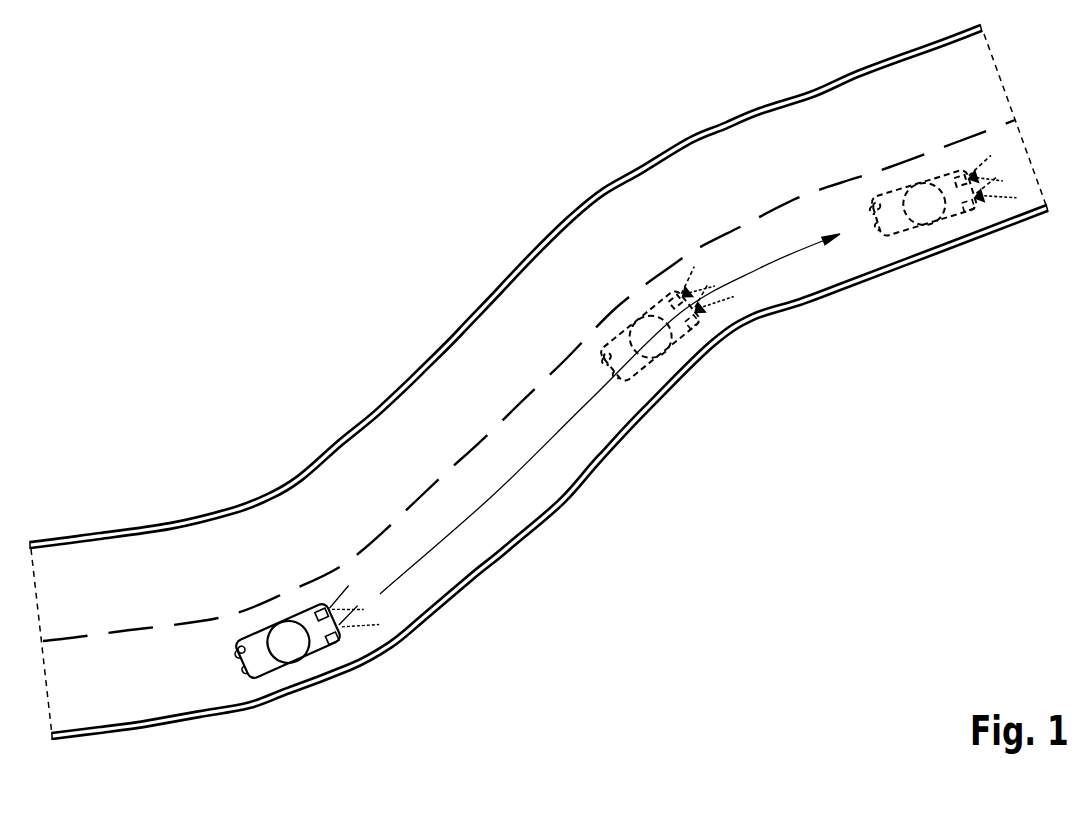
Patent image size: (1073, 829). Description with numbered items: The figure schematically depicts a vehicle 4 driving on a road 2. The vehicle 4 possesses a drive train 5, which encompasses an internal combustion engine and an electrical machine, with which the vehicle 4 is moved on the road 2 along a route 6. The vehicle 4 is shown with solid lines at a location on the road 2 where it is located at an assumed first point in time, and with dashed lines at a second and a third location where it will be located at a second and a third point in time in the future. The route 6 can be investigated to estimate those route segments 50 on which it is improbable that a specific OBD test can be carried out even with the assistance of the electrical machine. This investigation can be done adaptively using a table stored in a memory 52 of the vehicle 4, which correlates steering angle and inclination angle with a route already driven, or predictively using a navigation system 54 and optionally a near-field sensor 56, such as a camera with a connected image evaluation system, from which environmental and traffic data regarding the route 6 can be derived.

The road 2 is at (295, 497).
The vehicle 4 is at (593, 463).
The drive train 5 is at (333, 642).
The route 6 is at (490, 499).
The route segments 50 is at (704, 310).
The memory 52 is at (322, 611).
The navigation system 54 is at (240, 646).
The near-field sensor 56 is at (350, 625).